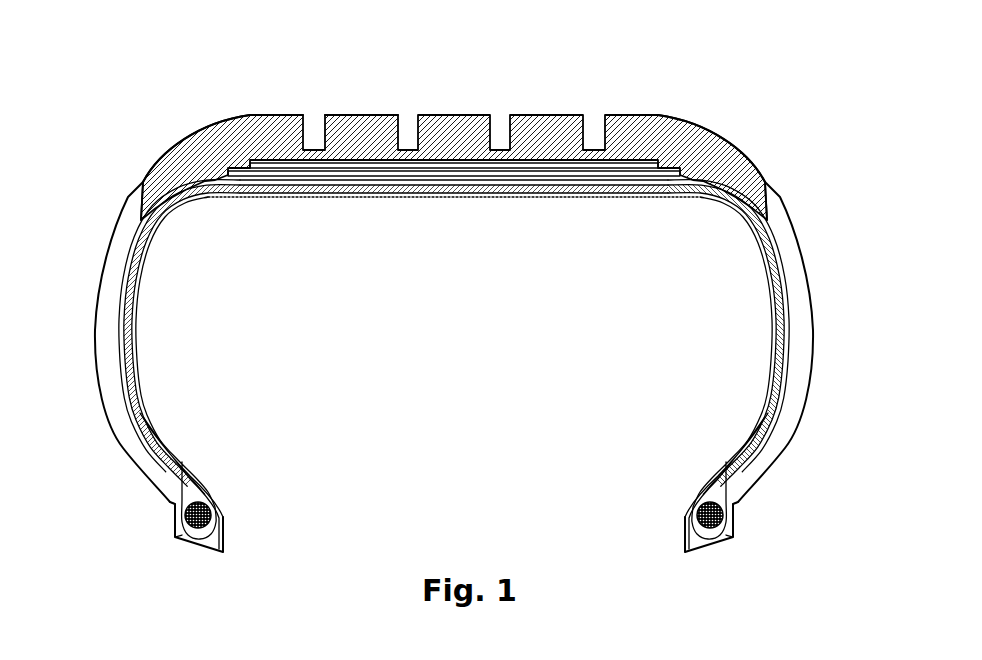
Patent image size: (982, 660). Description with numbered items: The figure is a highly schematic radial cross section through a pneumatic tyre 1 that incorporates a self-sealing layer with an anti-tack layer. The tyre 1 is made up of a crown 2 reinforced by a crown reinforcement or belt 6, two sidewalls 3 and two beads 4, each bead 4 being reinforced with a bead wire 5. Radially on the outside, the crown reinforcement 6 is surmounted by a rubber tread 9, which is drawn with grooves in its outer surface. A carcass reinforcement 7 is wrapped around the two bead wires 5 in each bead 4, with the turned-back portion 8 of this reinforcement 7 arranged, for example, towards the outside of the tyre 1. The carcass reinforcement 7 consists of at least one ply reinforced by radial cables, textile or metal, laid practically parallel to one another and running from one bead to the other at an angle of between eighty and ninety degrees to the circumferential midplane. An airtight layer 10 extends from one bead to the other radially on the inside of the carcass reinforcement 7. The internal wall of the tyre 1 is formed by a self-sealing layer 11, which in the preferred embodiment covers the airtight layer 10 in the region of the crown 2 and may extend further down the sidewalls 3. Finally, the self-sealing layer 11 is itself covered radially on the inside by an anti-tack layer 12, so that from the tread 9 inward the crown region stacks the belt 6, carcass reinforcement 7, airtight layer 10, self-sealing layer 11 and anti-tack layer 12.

The tyre 1 is at (285, 68).
The crown 2 is at (486, 100).
The sidewall 3 is at (102, 318).
The bead 4 is at (160, 470).
The bead wire 5 is at (198, 543).
The crown reinforcement 6 is at (535, 175).
The carcass reinforcement 7 is at (143, 242).
The turned-back portion 8 is at (163, 450).
The rubber tread 9 is at (440, 112).
The airtight layer 10 is at (125, 313).
The self-sealing layer 11 is at (417, 197).
The anti-tack layer 12 is at (643, 197).